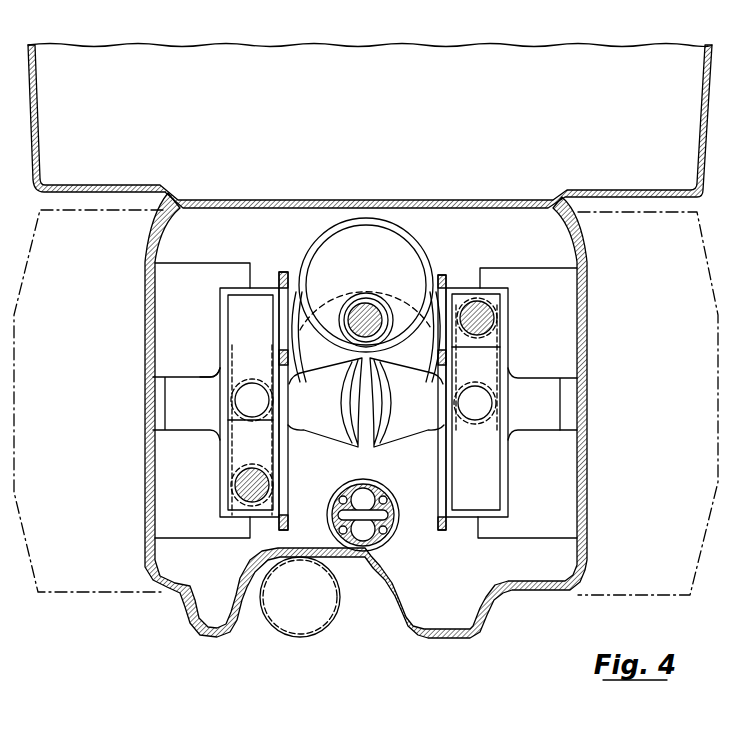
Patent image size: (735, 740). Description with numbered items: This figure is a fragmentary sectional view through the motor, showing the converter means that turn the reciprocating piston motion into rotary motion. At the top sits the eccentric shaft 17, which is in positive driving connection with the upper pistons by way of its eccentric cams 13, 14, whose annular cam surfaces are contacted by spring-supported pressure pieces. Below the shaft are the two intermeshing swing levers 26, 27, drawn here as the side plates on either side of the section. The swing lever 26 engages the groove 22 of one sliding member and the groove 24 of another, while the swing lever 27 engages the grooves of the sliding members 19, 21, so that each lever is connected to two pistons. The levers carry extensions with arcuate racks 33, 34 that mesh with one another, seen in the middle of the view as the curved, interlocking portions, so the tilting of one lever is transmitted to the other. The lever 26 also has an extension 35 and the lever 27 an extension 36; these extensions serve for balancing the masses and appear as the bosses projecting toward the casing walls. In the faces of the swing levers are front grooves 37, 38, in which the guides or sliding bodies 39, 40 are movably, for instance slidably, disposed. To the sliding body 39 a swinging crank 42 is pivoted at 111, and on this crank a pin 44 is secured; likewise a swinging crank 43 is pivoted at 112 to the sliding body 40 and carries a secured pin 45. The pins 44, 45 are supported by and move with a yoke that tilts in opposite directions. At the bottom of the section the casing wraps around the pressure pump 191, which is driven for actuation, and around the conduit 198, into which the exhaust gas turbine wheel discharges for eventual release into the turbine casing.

The eccentric cam 13 is at (392, 257).
The eccentric cam 14 is at (325, 322).
The eccentric shaft 17 is at (441, 283).
The sliding member 19 is at (382, 315).
The sliding member 21 is at (436, 480).
The groove 22 is at (281, 275).
The groove 24 is at (291, 481).
The swing lever 26 is at (480, 485).
The swing lever 27 is at (245, 330).
The arcuate rack 33 is at (400, 418).
The arcuate rack 34 is at (326, 418).
The extension 35 is at (555, 395).
The extension 36 is at (173, 400).
The front groove 37 is at (498, 425).
The front groove 38 is at (223, 393).
The sliding body 39 is at (228, 508).
The sliding body 40 is at (452, 296).
The swinging crank 42 is at (230, 438).
The swinging crank 43 is at (497, 358).
The pin 44 is at (250, 396).
The pin 45 is at (472, 397).
The pivot 111 is at (248, 512).
The pivot 112 is at (479, 318).
The pressure pump 191 is at (392, 527).
The conduit 198 is at (330, 614).